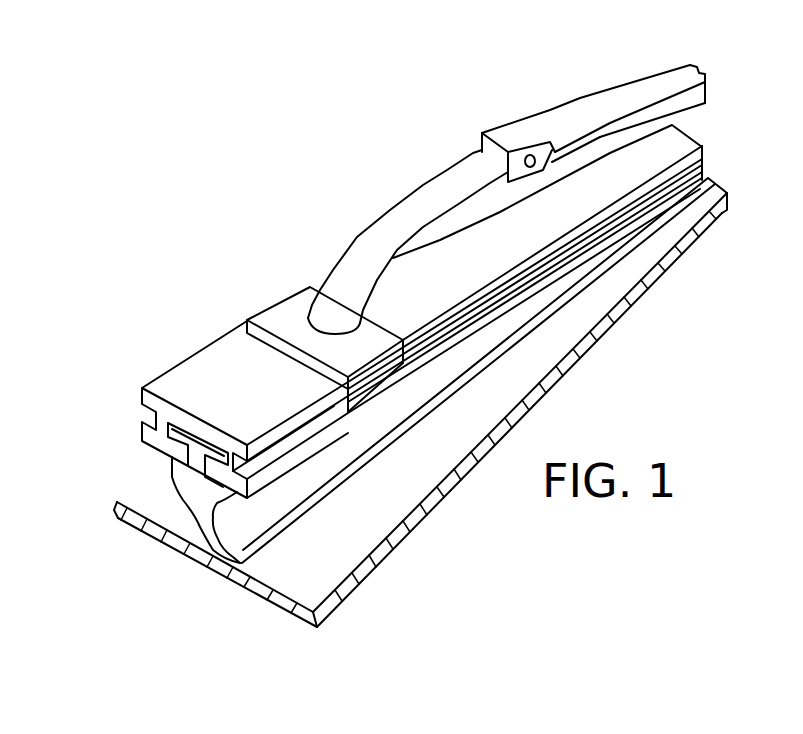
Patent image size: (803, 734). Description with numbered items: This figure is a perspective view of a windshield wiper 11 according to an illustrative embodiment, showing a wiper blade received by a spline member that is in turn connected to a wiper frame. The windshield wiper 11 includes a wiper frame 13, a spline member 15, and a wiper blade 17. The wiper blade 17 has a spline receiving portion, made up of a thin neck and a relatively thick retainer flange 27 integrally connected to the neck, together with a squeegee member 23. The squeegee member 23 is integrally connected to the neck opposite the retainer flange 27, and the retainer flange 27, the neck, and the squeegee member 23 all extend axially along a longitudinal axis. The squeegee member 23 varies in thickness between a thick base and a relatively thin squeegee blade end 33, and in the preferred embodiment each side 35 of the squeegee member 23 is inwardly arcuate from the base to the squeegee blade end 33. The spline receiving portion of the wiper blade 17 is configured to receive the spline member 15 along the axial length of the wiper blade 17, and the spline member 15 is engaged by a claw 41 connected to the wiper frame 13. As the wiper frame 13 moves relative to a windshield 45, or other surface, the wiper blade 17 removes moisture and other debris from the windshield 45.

The windshield wiper 11 is at (96, 60).
The wiper frame 13 is at (387, 213).
The spline member 15 is at (165, 374).
The wiper blade 17 is at (160, 498).
The squeegee member 23 is at (200, 503).
The retainer flange 27 is at (182, 438).
The squeegee blade end 33 is at (270, 596).
The side 35 is at (186, 558).
The claw 41 is at (410, 382).
The windshield 45 is at (408, 533).